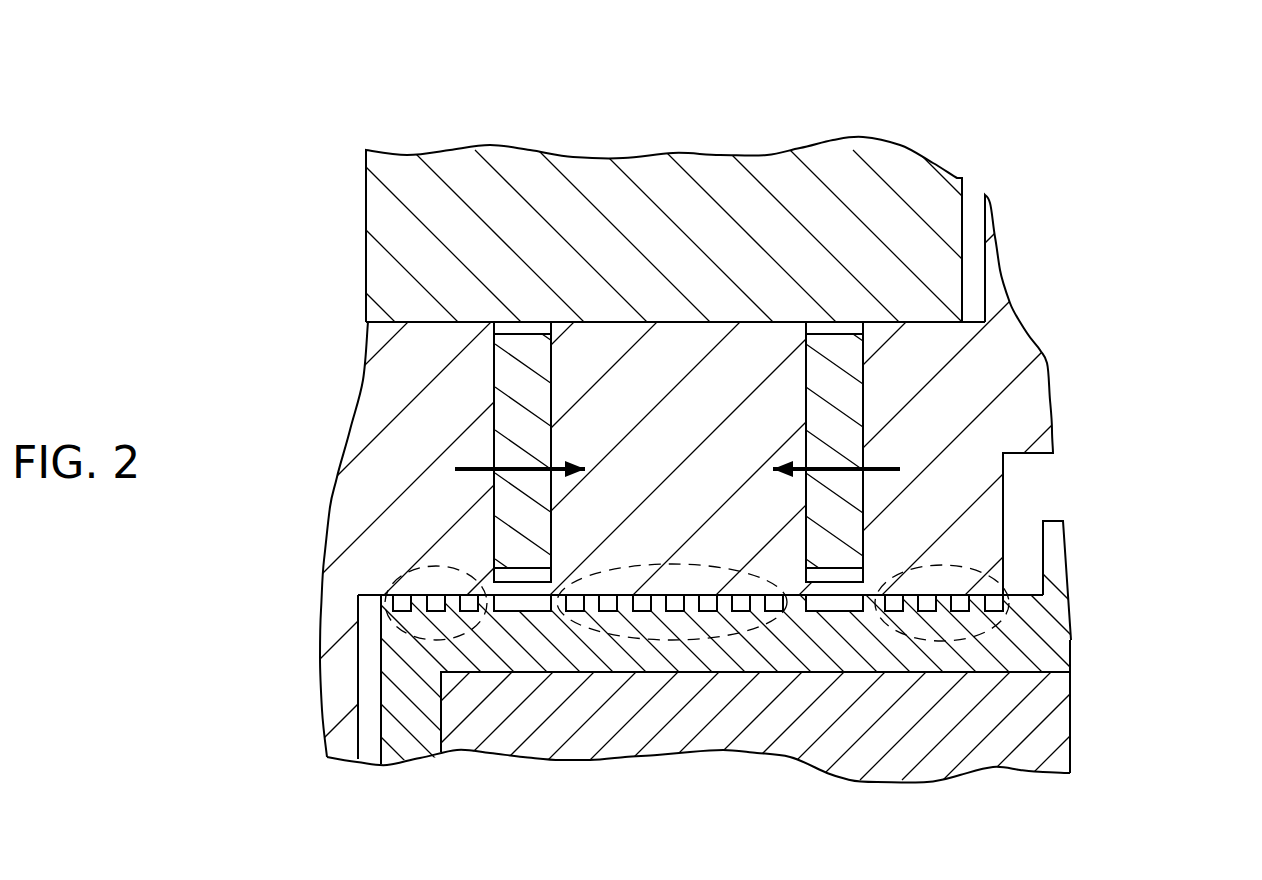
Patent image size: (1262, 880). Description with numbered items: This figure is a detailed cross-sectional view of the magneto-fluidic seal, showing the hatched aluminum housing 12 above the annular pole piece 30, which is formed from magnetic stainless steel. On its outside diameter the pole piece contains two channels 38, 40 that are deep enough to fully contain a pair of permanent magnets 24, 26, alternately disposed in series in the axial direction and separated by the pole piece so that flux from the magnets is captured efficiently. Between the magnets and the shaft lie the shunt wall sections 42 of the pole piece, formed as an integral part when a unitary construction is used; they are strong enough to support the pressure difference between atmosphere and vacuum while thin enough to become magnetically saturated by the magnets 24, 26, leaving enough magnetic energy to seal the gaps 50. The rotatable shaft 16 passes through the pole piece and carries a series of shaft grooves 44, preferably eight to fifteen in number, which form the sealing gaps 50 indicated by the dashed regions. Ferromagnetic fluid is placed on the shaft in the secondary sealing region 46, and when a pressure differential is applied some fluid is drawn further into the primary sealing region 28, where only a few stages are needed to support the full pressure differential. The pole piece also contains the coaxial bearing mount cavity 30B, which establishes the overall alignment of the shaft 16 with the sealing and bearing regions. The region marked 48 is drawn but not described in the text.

The aluminum housing 12 is at (629, 156).
The rotatable shaft 16 is at (378, 695).
The permanent magnet 24 is at (537, 383).
The permanent magnet 26 is at (849, 383).
The primary sealing region 28 is at (673, 644).
The annular pole piece 30 is at (361, 377).
The bearing mount cavity 30B is at (1077, 707).
The channel 38 is at (494, 418).
The channel 40 is at (868, 388).
The shunt wall section 42 is at (525, 611).
The shaft groove 44 is at (402, 611).
The secondary sealing region 46 is at (1003, 578).
The edge region 48 is at (393, 580).
The sealing gap 50 is at (572, 568).